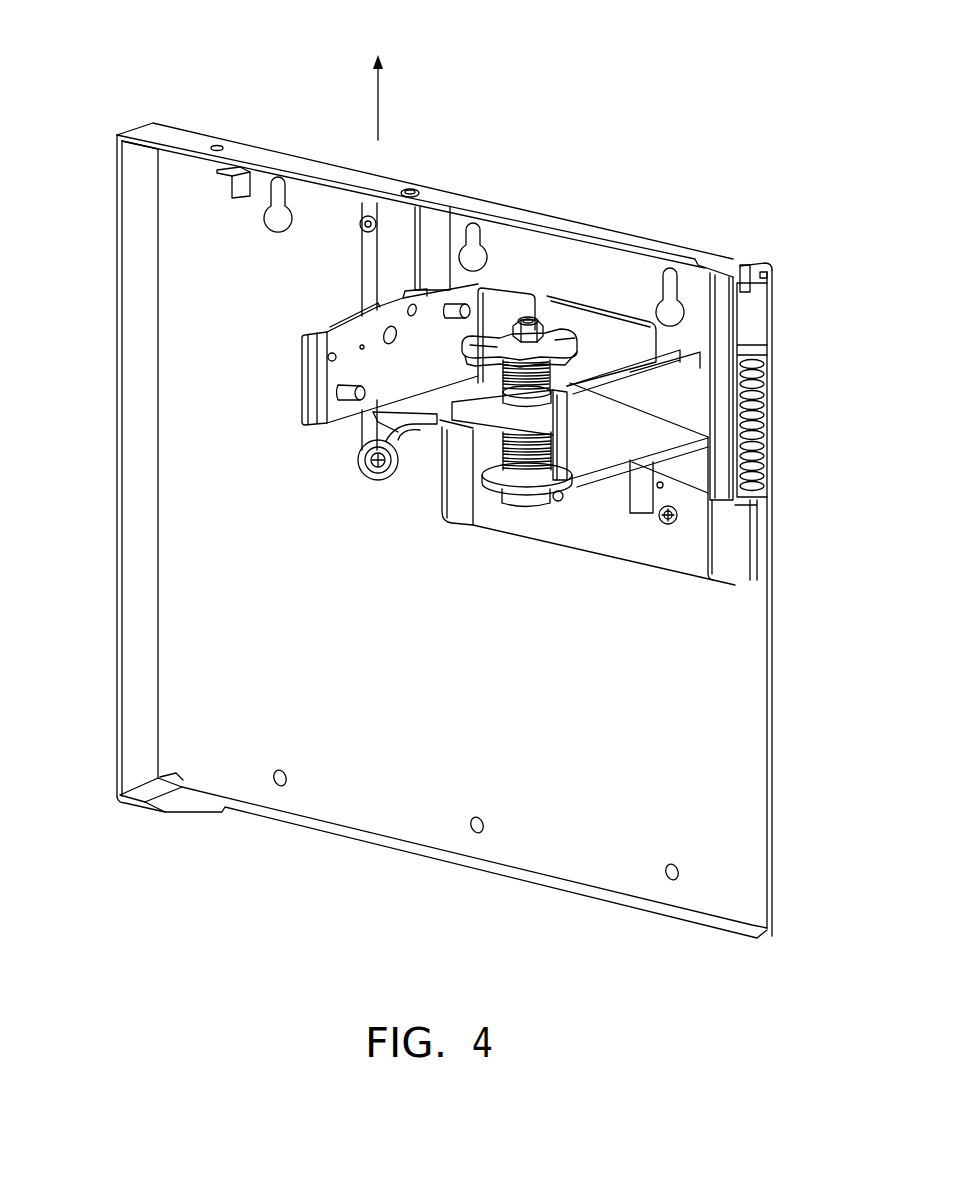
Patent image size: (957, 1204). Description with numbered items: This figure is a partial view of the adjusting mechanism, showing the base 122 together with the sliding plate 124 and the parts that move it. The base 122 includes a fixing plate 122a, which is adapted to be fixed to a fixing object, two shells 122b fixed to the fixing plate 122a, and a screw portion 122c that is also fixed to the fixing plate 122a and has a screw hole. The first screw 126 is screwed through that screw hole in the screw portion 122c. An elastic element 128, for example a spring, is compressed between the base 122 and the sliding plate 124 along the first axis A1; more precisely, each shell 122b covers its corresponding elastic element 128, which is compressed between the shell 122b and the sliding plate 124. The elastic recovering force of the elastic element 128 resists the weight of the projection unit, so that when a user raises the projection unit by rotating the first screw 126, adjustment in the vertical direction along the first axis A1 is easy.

The base 122 is at (95, 176).
The fixing plate 122a is at (180, 142).
The shells 122b is at (433, 225).
The screw portion 122c is at (488, 398).
The sliding plate 124 is at (597, 450).
The first screw 126 is at (530, 335).
The elastic element 128 is at (762, 410).
The first axis A1 is at (380, 102).